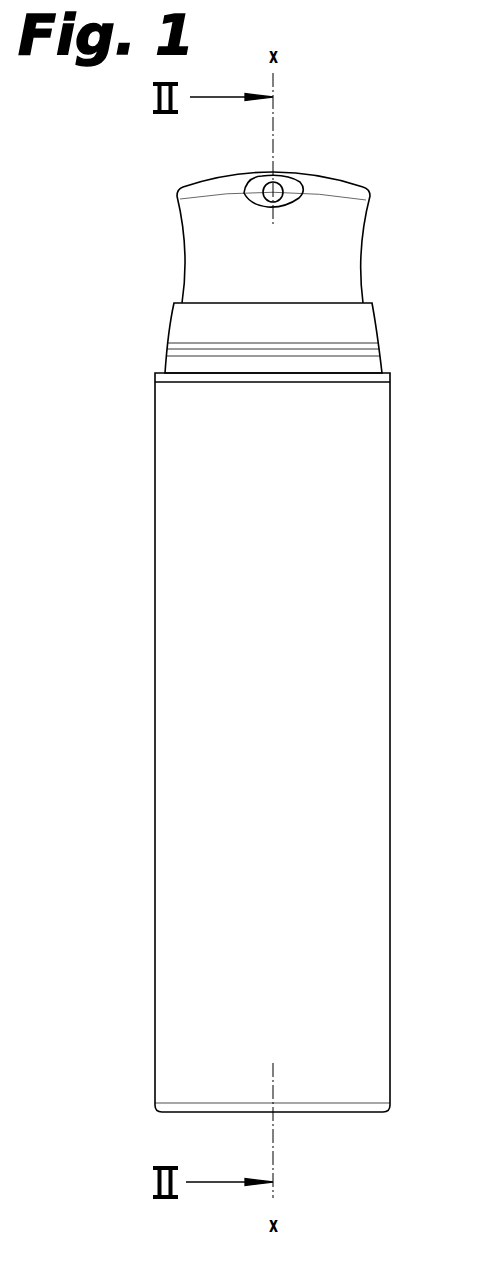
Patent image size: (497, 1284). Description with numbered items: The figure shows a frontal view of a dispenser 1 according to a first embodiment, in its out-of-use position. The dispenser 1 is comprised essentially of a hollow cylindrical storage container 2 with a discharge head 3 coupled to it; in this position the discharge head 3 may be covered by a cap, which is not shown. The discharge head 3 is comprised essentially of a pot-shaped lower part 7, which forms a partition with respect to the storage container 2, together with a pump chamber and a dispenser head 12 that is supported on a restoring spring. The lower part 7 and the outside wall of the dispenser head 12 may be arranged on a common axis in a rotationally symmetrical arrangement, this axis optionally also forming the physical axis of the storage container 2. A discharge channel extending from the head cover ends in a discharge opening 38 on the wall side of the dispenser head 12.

The dispenser 1 is at (142, 208).
The storage container 2 is at (203, 622).
The discharge head 3 is at (137, 300).
The lower part 7 is at (352, 320).
The dispenser head 12 is at (392, 173).
The discharge opening 38 is at (273, 192).